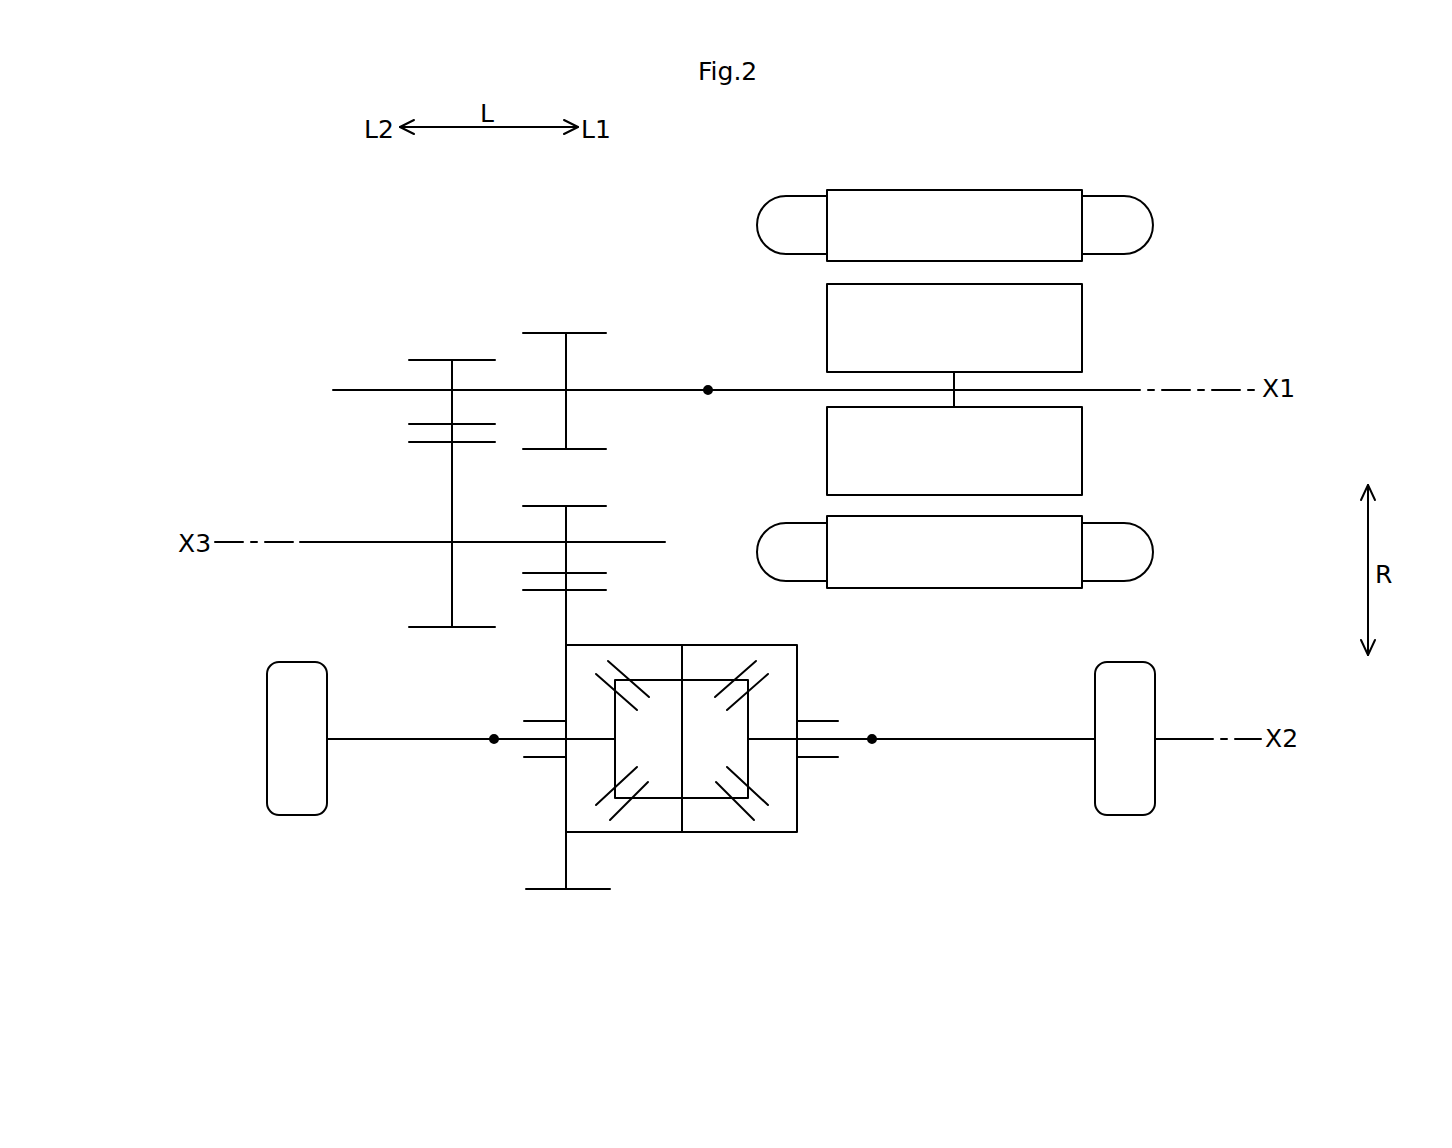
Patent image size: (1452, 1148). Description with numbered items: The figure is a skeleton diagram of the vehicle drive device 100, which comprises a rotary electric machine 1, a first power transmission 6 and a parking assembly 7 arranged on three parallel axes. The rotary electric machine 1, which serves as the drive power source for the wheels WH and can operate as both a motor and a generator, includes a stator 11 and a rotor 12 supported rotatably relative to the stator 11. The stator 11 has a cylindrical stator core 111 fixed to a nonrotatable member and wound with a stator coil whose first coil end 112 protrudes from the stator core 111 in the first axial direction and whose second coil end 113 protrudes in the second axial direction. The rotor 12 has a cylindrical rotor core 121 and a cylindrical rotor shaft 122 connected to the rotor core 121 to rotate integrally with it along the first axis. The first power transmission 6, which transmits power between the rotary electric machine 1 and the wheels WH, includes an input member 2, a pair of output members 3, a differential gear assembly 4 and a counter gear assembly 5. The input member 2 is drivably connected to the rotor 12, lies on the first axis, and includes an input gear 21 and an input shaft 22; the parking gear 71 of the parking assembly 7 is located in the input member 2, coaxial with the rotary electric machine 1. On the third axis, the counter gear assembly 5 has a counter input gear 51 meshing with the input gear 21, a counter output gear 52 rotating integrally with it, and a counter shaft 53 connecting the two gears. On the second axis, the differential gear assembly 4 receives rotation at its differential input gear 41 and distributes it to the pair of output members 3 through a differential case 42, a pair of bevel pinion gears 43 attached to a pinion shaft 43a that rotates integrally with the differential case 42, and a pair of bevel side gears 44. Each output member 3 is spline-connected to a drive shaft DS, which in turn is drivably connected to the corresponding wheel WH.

The vehicle drive device 100 is at (328, 253).
The rotary electric machine 1 is at (1253, 163).
The stator 11 is at (855, 180).
The stator core 111 is at (970, 190).
The first coil end 112 is at (1115, 196).
The second coil end 113 is at (766, 207).
The rotor 12 is at (1110, 345).
The rotor core 121 is at (1082, 296).
The rotor shaft 122 is at (772, 390).
The input member 2 is at (545, 363).
The input gear 21 is at (430, 360).
The input shaft 22 is at (657, 390).
The first power transmission 6 is at (508, 297).
The parking assembly 7 is at (606, 355).
The parking gear 71 is at (582, 333).
The counter gear assembly 5 is at (408, 580).
The counter input gear 51 is at (468, 630).
The counter output gear 52 is at (582, 506).
The counter shaft 53 is at (488, 542).
The differential gear assembly 4 is at (823, 670).
The differential input gear 41 is at (550, 892).
The differential case 42 is at (765, 832).
The pinion gear 43 is at (710, 680).
The pinion shaft 43a is at (677, 817).
The side gear 44 is at (615, 763).
The output member 3 is at (516, 743).
The drive shaft DS is at (395, 740).
The wheel WH is at (298, 816).